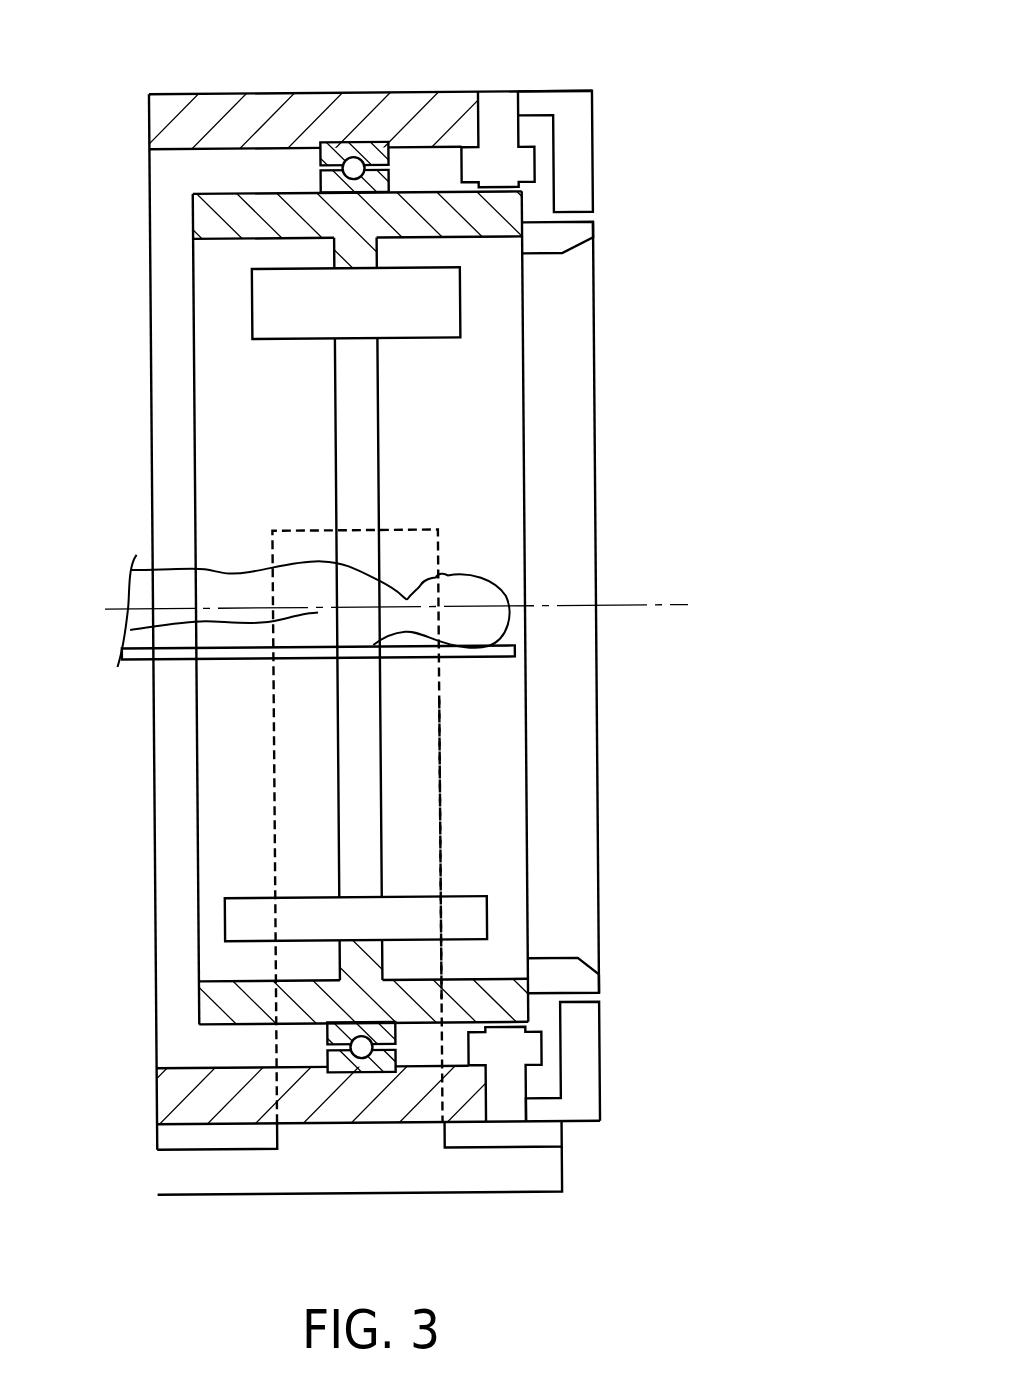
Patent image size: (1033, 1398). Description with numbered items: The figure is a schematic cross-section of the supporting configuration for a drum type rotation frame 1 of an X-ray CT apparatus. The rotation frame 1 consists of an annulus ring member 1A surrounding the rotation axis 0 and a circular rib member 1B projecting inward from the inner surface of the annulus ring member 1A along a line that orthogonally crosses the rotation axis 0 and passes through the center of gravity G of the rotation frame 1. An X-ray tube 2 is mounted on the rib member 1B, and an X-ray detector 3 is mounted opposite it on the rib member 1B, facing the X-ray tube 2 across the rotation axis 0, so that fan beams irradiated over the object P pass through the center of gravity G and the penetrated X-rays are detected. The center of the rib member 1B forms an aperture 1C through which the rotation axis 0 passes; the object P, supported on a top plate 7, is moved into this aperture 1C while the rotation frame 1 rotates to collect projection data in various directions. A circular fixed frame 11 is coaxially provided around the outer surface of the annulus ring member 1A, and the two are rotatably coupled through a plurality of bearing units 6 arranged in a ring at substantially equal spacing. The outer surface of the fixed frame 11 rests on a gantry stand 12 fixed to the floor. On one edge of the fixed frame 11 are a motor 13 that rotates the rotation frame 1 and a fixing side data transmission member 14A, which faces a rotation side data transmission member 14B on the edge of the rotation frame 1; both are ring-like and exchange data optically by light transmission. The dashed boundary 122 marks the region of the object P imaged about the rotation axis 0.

The rotation axis 0 is at (406, 611).
The drum type rotation frame 1 is at (194, 378).
The annulus ring member 1A is at (232, 193).
The circular rib member 1B is at (357, 258).
The aperture 1C is at (328, 832).
The X-ray tube 2 is at (462, 306).
The X-ray detector 3 is at (463, 897).
The bearing units 6 is at (362, 92).
The top plate 7 is at (480, 658).
The circular fixed frame 11 is at (240, 93).
The gantry stand 12 is at (303, 1193).
The motor 13 is at (508, 172).
The fixing side data transmission member 14A is at (598, 187).
The rotation side data transmission member 14B is at (570, 244).
The imaging region boundary 122 is at (442, 801).
The center of gravity G is at (360, 600).
The object P is at (480, 580).